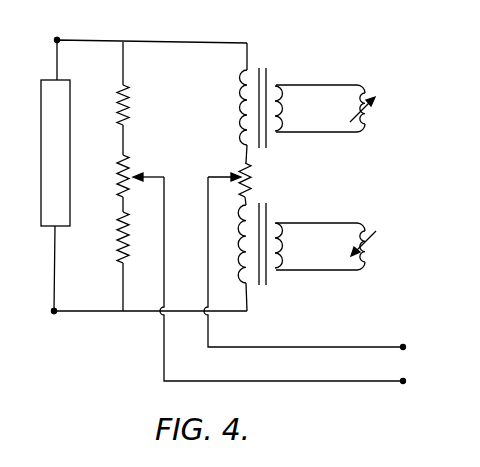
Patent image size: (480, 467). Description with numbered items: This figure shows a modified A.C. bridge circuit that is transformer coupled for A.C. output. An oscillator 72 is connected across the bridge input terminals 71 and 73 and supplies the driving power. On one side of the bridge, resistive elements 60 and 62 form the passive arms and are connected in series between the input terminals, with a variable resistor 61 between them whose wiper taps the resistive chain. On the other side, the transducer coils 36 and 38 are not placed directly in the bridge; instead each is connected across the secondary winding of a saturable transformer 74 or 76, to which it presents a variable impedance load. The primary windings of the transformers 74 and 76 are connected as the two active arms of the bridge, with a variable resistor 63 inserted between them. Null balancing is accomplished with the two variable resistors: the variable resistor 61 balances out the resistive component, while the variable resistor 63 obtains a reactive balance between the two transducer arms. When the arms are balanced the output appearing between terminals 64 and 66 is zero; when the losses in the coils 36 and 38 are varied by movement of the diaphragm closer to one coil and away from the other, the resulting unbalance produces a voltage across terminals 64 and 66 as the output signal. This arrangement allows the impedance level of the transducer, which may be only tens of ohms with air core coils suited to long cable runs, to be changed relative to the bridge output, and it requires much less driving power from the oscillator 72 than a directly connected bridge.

The transducer coil 36 is at (372, 110).
The transducer coil 38 is at (368, 262).
The resistive element 60 is at (131, 100).
The variable resistor 61 is at (120, 170).
The resistive element 62 is at (118, 233).
The variable resistor 63 is at (250, 172).
The output terminal 64 is at (406, 338).
The output terminal 66 is at (403, 383).
The bridge input terminal 71 is at (57, 39).
The oscillator 72 is at (41, 100).
The bridge input terminal 73 is at (55, 313).
The saturable transformer 74 is at (268, 90).
The saturable transformer 76 is at (272, 222).